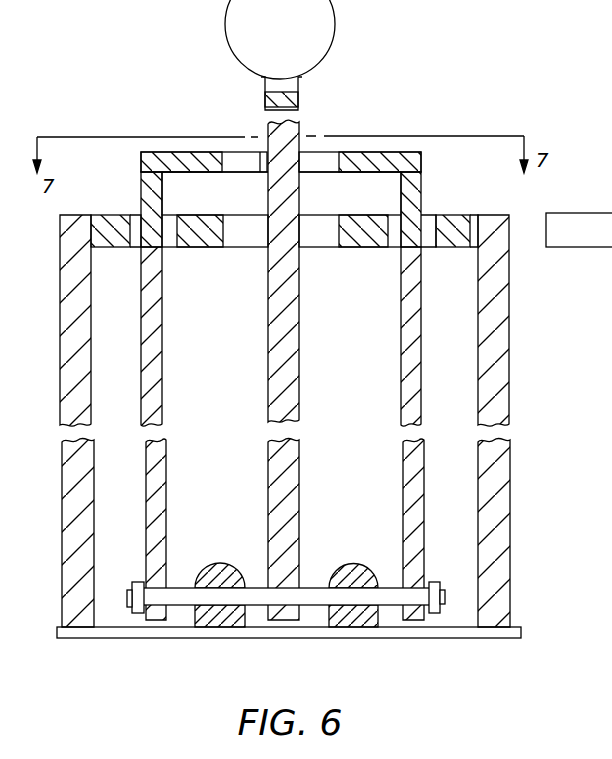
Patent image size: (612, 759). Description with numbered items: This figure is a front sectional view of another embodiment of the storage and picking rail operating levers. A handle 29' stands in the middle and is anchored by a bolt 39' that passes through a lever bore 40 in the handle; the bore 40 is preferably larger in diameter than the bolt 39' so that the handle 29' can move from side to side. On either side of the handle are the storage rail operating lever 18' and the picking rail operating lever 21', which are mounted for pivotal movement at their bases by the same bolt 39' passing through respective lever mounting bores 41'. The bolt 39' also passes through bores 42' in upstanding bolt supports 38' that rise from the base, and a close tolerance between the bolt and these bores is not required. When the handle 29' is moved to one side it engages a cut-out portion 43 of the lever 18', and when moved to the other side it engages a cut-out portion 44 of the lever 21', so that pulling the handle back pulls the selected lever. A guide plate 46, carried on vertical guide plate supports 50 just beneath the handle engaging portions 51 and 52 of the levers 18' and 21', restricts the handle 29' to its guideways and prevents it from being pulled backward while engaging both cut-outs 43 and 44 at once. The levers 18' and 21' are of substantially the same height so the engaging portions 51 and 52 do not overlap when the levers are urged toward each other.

The handle 29' is at (298, 61).
The lever bore 40 is at (300, 588).
The handle engaging portion 51 is at (197, 158).
The handle engaging portion 52 is at (375, 160).
The operating lever 18' is at (118, 299).
The operating lever 21' is at (441, 299).
The cut-out portion 43 is at (243, 163).
The cut-out portion 44 is at (323, 162).
The guide plate 46 is at (467, 229).
The vertical guide plate support 50 is at (508, 328).
The lever mounting bore 41' is at (301, 529).
The upstanding bolt support 38' is at (303, 626).
The bore 42' is at (290, 635).
The bolt 39' is at (311, 628).